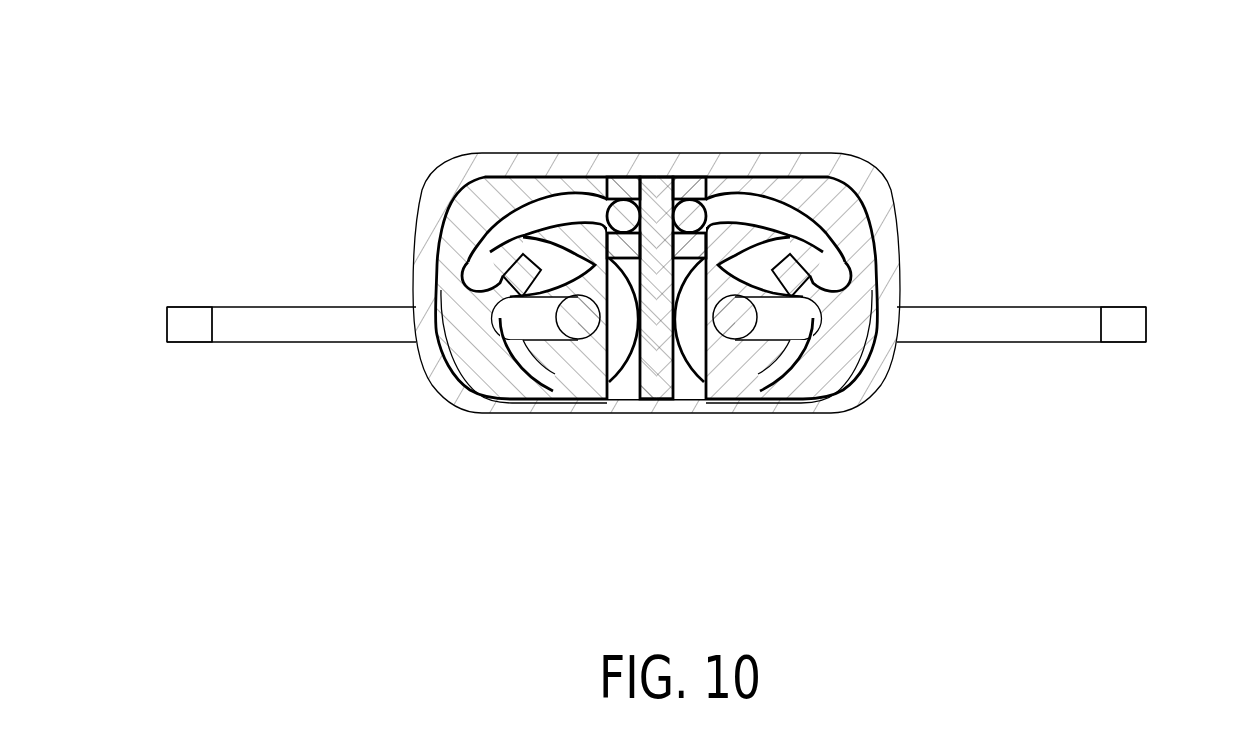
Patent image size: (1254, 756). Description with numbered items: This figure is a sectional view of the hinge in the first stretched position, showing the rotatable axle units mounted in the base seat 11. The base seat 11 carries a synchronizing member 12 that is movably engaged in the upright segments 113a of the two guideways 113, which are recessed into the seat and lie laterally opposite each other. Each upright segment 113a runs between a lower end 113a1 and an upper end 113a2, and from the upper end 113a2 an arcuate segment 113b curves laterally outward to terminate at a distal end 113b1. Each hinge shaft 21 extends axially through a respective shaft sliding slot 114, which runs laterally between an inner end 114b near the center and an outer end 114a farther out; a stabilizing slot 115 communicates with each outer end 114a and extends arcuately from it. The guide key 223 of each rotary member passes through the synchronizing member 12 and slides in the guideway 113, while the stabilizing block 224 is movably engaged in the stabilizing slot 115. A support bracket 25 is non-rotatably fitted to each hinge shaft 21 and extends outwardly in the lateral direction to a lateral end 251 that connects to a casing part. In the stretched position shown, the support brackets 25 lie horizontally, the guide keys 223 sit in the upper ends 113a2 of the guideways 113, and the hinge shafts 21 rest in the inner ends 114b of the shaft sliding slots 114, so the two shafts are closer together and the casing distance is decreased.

The base seat 11 is at (867, 403).
The synchronizing member 12 is at (632, 177).
The hinge shaft 21 is at (578, 317).
The support bracket 25 is at (247, 307).
The lateral end 251 is at (165, 325).
The guideway 113 is at (517, 214).
The upright segment 113a is at (748, 218).
The lower end 113a1 is at (622, 382).
The upper end 113a2 is at (598, 195).
The arcuate segment 113b is at (495, 197).
The distal end 113b1 is at (477, 272).
The shaft sliding slot 114 is at (541, 325).
The outer end 114a is at (504, 321).
The inner end 114b is at (599, 380).
The stabilizing slot 115 is at (522, 357).
The guide key 223 is at (563, 177).
The stabilizing block 224 is at (513, 266).